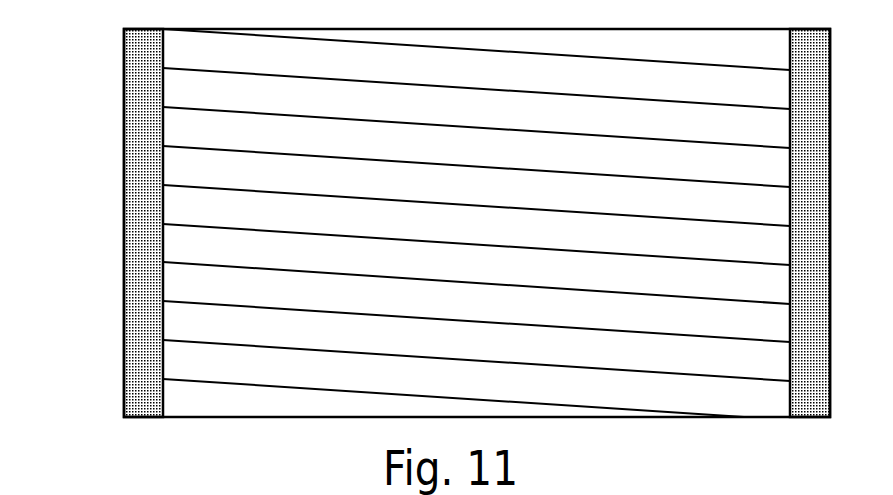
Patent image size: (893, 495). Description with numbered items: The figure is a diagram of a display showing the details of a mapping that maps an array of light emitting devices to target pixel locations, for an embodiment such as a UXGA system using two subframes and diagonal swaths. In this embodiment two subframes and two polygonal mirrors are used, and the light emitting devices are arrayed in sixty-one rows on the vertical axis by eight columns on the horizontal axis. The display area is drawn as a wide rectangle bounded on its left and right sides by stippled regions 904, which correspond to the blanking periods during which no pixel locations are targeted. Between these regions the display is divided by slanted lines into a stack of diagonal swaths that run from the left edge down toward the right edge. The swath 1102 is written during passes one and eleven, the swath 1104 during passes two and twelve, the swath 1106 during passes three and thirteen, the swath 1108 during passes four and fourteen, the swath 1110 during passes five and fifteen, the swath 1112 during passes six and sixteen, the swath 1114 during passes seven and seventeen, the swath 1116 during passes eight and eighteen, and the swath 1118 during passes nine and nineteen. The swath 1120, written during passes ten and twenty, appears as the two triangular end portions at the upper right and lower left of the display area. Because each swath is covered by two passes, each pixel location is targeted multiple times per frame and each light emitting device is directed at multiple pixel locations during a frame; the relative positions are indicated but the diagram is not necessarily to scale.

The regions 904 is at (138, 70).
The diagonal swath 1102 is at (659, 91).
The diagonal swath 1104 is at (662, 127).
The diagonal swath 1106 is at (659, 167).
The diagonal swath 1108 is at (662, 207).
The diagonal swath 1110 is at (659, 246).
The diagonal swath 1112 is at (662, 283).
The diagonal swath 1114 is at (659, 326).
The diagonal swath 1116 is at (662, 362).
The diagonal swath 1118 is at (662, 403).
The diagonal swath 1120 is at (774, 62).